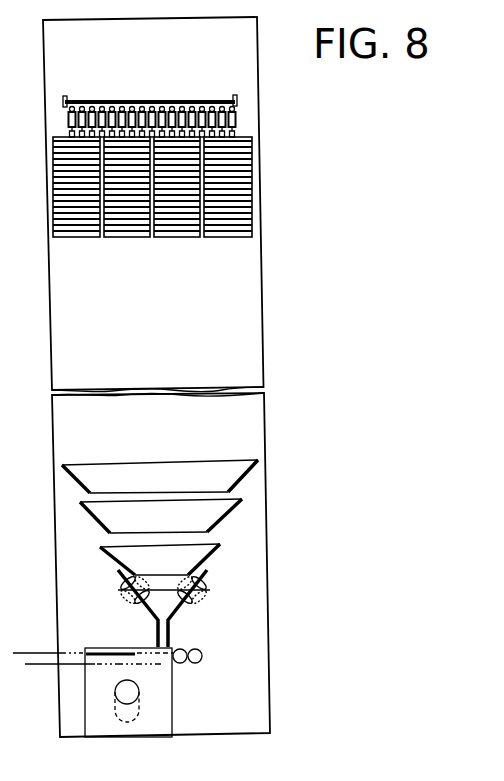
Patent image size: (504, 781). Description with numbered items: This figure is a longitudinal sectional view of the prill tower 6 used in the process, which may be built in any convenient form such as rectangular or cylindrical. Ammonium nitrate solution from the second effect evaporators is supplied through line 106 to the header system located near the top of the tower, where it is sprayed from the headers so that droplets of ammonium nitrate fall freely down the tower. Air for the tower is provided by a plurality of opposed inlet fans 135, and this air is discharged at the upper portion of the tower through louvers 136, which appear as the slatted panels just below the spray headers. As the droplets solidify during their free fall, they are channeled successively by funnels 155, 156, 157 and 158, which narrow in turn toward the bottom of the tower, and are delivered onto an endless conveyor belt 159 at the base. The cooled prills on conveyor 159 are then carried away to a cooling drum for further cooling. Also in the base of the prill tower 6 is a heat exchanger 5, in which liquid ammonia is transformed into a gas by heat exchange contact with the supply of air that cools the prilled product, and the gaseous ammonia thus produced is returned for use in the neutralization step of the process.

The heat exchanger 5 is at (172, 702).
The prill tower 6 is at (264, 360).
The line 106 is at (228, 116).
The inlet fans 135 is at (226, 586).
The louvers 136 is at (250, 191).
The funnel 155 is at (248, 478).
The funnel 156 is at (227, 522).
The funnel 157 is at (210, 563).
The funnel 158 is at (180, 618).
The endless conveyor belt 159 is at (43, 666).